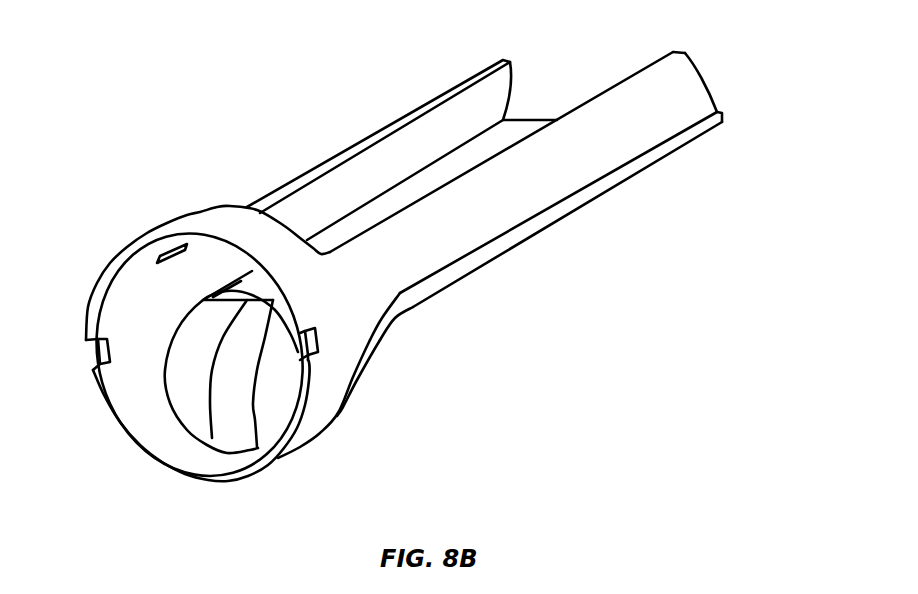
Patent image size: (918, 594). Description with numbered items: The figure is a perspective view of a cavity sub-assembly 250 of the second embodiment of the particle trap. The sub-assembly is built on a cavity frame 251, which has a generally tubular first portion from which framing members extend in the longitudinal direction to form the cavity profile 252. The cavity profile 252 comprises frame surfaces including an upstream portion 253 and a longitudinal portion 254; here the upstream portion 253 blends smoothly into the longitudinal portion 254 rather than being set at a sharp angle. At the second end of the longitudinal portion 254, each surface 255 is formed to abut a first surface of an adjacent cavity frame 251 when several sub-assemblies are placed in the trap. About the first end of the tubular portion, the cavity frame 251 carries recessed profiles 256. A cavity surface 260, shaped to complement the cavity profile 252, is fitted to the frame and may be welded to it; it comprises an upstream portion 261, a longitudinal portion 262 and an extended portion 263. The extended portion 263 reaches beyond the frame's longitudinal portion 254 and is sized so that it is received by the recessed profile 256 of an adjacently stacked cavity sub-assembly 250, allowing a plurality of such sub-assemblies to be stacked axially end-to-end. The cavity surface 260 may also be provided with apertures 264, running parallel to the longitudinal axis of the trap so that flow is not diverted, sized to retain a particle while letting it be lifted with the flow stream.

The cavity sub-assembly 250 is at (409, 275).
The cavity frame 251 is at (181, 213).
The cavity profile 252 is at (493, 262).
The cavity profile upstream portion 253 is at (340, 410).
The cavity profile longitudinal portion 254 is at (427, 168).
The surface of second end of cavity profile longitudinal portion 255 is at (508, 95).
The recessed profile 256 is at (88, 354).
The cavity surface 260 is at (525, 171).
The cavity surface upstream portion 261 is at (377, 353).
The cavity surface longitudinal portion 262 is at (663, 163).
The cavity surface extended portion 263 is at (724, 116).
The aperture 264 is at (183, 372).